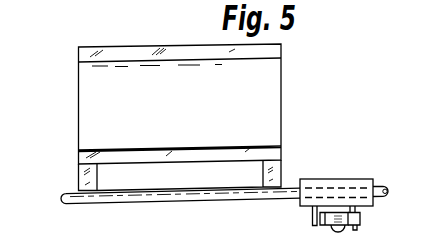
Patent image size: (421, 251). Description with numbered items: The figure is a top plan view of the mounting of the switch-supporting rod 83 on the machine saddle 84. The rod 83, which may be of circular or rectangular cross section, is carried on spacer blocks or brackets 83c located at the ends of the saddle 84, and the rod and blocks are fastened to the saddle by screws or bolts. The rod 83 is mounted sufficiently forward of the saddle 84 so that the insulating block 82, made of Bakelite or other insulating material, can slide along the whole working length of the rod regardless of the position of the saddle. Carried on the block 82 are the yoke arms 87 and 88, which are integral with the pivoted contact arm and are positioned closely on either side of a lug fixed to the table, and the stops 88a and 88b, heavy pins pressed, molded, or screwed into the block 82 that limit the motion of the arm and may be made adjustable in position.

The insulating block 82 is at (327, 179).
The rod 83 is at (183, 200).
The spacer blocks 83c is at (76, 177).
The saddle 84 is at (185, 98).
The yoke arm 87 is at (323, 227).
The yoke arm 88 is at (359, 215).
The stop 88a is at (312, 217).
The stop 88b is at (356, 230).